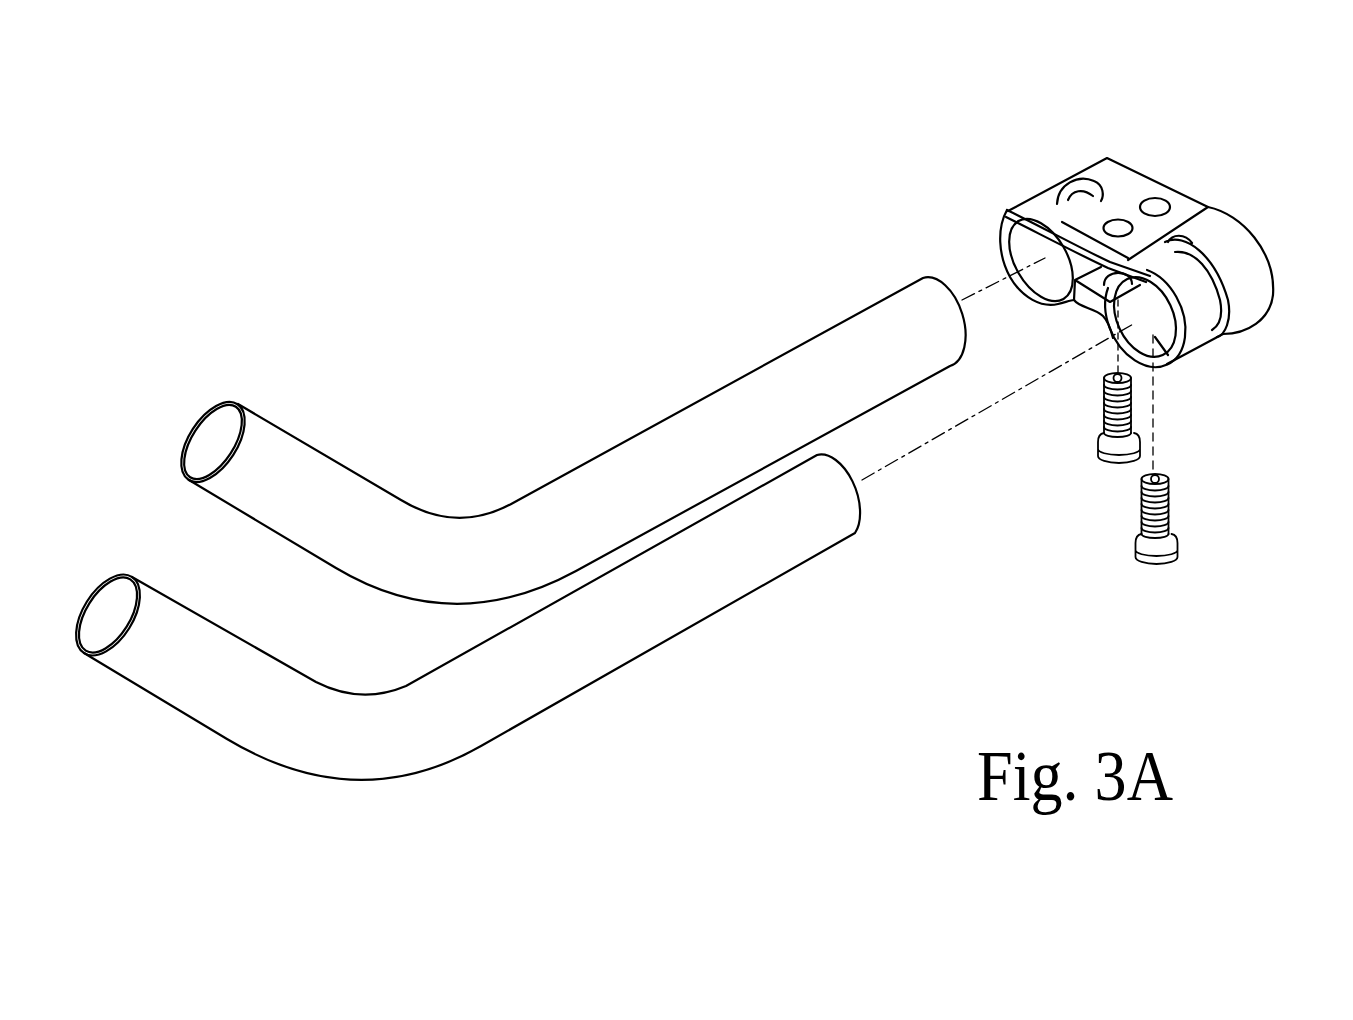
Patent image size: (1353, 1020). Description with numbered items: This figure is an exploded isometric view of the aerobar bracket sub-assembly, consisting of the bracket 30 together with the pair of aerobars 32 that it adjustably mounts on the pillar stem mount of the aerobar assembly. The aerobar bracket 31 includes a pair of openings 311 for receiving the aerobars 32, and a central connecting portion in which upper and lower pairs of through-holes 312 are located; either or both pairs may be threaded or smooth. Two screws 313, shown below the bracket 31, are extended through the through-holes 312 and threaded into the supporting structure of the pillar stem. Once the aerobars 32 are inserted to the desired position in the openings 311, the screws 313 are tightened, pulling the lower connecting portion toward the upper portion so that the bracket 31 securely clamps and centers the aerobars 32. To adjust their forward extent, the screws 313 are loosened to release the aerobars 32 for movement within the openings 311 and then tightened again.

The bracket 30 is at (693, 410).
The aerobar bracket 31 is at (1117, 253).
The openings 311 is at (1111, 300).
The through-holes 312 is at (1144, 138).
The screws 313 is at (1194, 463).
The aerobars 32 is at (599, 519).